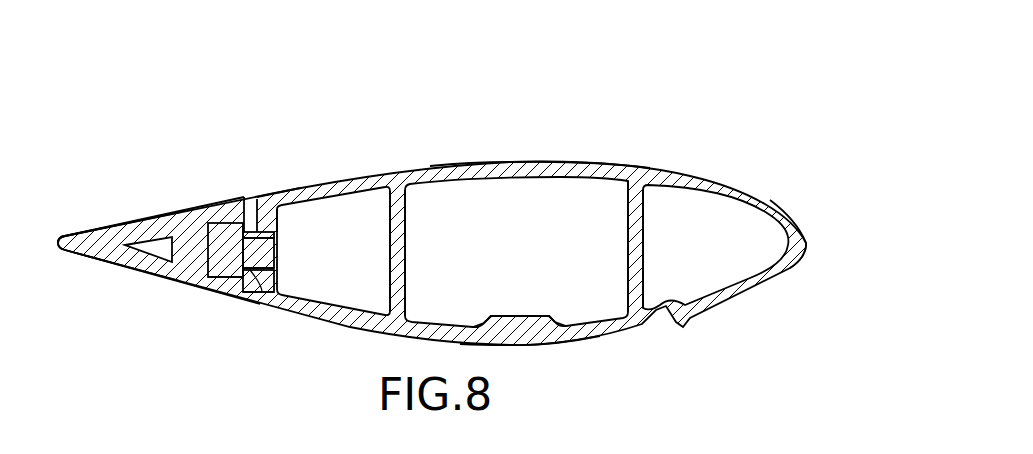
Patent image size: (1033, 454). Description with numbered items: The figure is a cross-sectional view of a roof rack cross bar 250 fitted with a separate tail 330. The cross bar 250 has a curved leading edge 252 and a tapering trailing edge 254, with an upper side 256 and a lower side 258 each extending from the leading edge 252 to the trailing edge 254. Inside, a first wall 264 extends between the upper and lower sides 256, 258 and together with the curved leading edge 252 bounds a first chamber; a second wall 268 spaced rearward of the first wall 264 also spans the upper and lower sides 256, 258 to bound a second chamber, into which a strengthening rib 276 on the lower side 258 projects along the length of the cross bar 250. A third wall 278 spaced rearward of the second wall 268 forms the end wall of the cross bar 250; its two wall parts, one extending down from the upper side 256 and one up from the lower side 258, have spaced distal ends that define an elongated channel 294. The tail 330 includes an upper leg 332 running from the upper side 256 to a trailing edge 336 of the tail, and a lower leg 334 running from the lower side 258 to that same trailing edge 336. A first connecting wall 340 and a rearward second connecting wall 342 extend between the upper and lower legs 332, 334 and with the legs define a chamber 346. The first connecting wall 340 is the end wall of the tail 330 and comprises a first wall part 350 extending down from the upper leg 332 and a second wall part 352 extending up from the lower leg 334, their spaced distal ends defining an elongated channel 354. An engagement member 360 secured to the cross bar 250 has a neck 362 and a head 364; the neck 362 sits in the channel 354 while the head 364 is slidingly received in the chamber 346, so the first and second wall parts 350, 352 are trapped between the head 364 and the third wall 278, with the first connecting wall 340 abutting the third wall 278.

The cross bar 250 is at (716, 144).
The curved leading edge 252 is at (803, 240).
The tapering trailing edge 254 is at (260, 200).
The upper side 256 is at (537, 162).
The lower side 258 is at (556, 347).
The first wall 264 is at (628, 237).
The second wall 268 is at (407, 252).
The strengthening rib 276 is at (518, 312).
The third wall 278 is at (277, 218).
The elongated channel 294 is at (277, 274).
The tail 330 is at (173, 312).
The upper leg 332 is at (123, 233).
The lower leg 334 is at (133, 258).
The trailing edge 336 is at (70, 250).
The first connecting wall 340 is at (248, 224).
The second connecting wall 342 is at (158, 247).
The chamber 346 is at (213, 270).
The first wall part 350 is at (273, 224).
The second wall part 352 is at (270, 280).
The elongated channel 354 is at (252, 268).
The engagement member 360 is at (224, 233).
The neck 362 is at (268, 248).
The head 364 is at (226, 267).